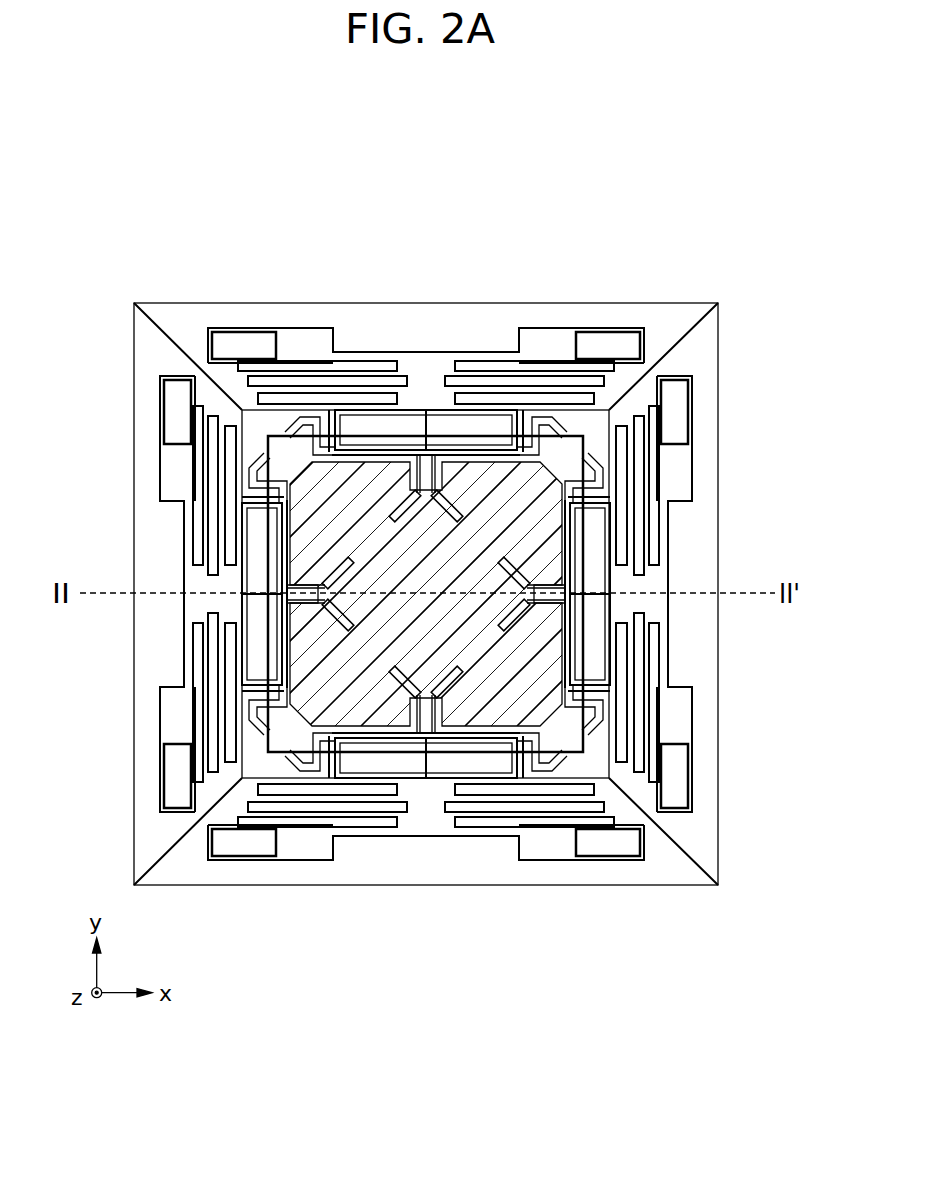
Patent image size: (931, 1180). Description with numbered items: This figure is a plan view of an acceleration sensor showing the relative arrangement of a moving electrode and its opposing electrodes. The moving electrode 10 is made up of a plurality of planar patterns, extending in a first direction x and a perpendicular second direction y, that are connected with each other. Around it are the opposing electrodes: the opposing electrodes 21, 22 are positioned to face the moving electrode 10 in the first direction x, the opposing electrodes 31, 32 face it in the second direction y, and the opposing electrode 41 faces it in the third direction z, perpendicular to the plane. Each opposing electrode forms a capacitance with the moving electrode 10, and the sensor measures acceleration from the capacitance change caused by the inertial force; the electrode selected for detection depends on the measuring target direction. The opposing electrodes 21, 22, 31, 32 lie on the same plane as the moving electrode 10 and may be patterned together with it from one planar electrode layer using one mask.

The moving electrode 10 is at (540, 345).
The opposing electrode 21 is at (150, 555).
The opposing electrode 22 is at (700, 657).
The opposing electrode 31 is at (424, 313).
The opposing electrode 32 is at (470, 870).
The opposing electrode 41 is at (583, 540).